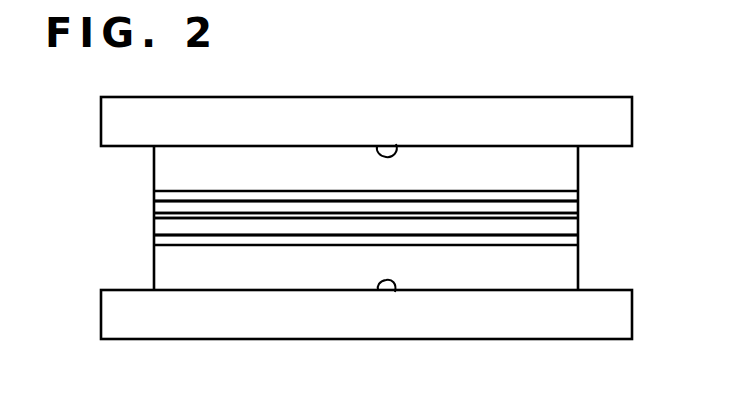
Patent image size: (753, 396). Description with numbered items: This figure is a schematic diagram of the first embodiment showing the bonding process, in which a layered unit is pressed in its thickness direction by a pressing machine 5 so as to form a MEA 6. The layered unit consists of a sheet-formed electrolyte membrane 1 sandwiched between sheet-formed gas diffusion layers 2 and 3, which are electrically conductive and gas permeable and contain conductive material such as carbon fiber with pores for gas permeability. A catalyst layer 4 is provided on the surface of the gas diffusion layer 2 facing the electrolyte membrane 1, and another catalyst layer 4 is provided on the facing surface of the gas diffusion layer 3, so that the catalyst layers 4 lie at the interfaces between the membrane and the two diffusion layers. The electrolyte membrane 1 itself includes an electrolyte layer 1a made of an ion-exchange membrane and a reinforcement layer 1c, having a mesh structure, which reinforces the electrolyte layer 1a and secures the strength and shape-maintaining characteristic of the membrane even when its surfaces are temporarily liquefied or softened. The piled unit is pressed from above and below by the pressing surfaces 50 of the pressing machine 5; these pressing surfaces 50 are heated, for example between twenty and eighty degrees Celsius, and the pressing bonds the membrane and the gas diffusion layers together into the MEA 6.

The electrolyte membrane 1 is at (358, 277).
The electrolyte layer 1a is at (545, 206).
The reinforcement layer 1c is at (515, 215).
The gas diffusion layer 2 is at (153, 168).
The gas diffusion layer 3 is at (153, 270).
The catalyst layer 4 is at (265, 196).
The pressing machine 5 is at (497, 110).
The MEA 6 is at (598, 188).
The pressing surfaces 50 is at (396, 144).